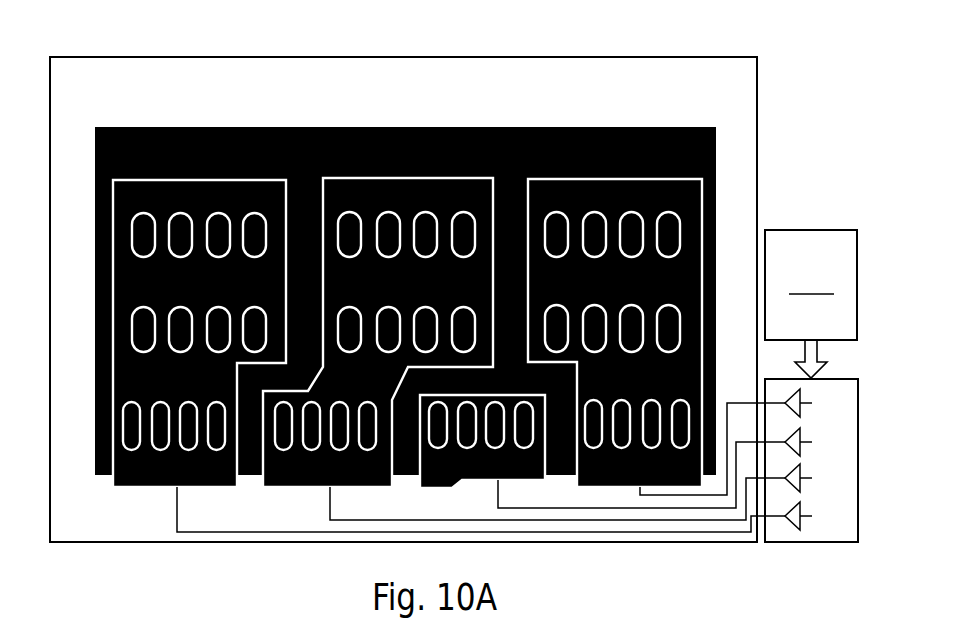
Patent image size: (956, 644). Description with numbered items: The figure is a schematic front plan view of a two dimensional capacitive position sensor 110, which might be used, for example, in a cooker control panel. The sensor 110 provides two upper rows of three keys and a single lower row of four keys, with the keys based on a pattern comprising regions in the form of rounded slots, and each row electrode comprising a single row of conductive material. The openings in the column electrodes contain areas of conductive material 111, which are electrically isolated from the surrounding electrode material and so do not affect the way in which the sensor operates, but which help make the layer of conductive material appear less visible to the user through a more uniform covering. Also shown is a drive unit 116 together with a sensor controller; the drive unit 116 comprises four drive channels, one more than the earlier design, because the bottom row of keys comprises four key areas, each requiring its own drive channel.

The two dimensional capacitive position sensor 110 is at (594, 47).
The areas of conductive material 111 is at (680, 233).
The drive unit 116 is at (810, 542).